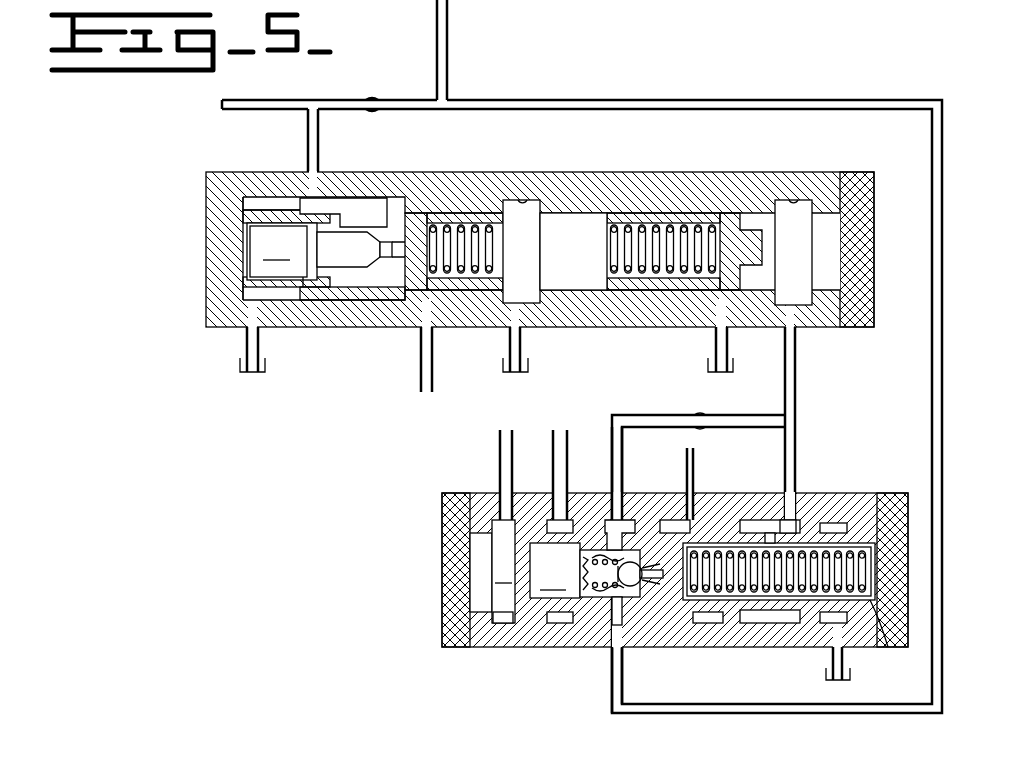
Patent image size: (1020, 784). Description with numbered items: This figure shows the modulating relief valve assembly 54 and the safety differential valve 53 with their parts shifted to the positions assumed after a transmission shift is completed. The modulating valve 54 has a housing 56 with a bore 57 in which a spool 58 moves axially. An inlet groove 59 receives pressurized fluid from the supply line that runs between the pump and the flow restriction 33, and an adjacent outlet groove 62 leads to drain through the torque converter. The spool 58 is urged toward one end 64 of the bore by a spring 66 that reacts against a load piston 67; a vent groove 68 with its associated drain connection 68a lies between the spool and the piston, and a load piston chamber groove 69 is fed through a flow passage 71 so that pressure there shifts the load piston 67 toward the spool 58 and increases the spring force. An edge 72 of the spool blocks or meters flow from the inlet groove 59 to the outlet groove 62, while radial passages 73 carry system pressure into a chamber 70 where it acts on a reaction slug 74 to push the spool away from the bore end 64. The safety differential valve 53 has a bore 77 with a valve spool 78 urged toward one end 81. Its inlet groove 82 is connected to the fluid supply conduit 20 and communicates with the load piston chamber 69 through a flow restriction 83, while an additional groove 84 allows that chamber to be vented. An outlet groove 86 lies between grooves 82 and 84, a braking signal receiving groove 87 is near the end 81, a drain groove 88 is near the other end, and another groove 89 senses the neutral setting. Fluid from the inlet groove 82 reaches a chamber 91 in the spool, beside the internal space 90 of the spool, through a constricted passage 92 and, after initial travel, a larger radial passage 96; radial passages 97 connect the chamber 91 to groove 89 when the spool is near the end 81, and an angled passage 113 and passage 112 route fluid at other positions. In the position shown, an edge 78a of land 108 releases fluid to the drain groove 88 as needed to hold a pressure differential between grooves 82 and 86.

The fluid supply conduit 20 is at (452, 103).
The flow restriction 33 is at (372, 98).
The safety differential valve 53 is at (440, 525).
The modulating relief valve assembly 54 is at (207, 262).
The housing 56 is at (596, 212).
The bore 57 is at (612, 232).
The spool 58 is at (350, 210).
The inlet groove 59 is at (338, 288).
The outlet groove 62 is at (440, 300).
The end of bore 64 is at (240, 207).
The spring 66 is at (600, 292).
The load piston 67 is at (733, 228).
The vent groove 68 is at (522, 198).
The drain port 68a is at (722, 322).
The load piston chamber groove 69 is at (797, 202).
The chamber 70 is at (306, 290).
The flow passage 71 is at (798, 392).
The edge 72 is at (400, 224).
The radial passages 73 is at (426, 338).
The reaction slug 74 is at (313, 251).
The bore 77 is at (870, 543).
The valve spool 78 is at (524, 604).
The edge of land 78a is at (880, 630).
The end of bore 81 is at (482, 562).
The inlet groove 82 is at (606, 632).
The flow restriction 83 is at (690, 412).
The groove 84 is at (783, 626).
The outlet groove 86 is at (712, 626).
The braking signal receiving groove 87 is at (497, 628).
The drain groove 88 is at (838, 650).
The groove 89 is at (552, 628).
The chamber 90 is at (555, 570).
The chamber 91 is at (510, 571).
The constricted flow passage 92 is at (702, 520).
The radial passage 96 is at (672, 625).
The radial passages 97 is at (592, 520).
The land 108 is at (820, 520).
The passage 112 is at (738, 522).
The angled passage 113 is at (640, 625).